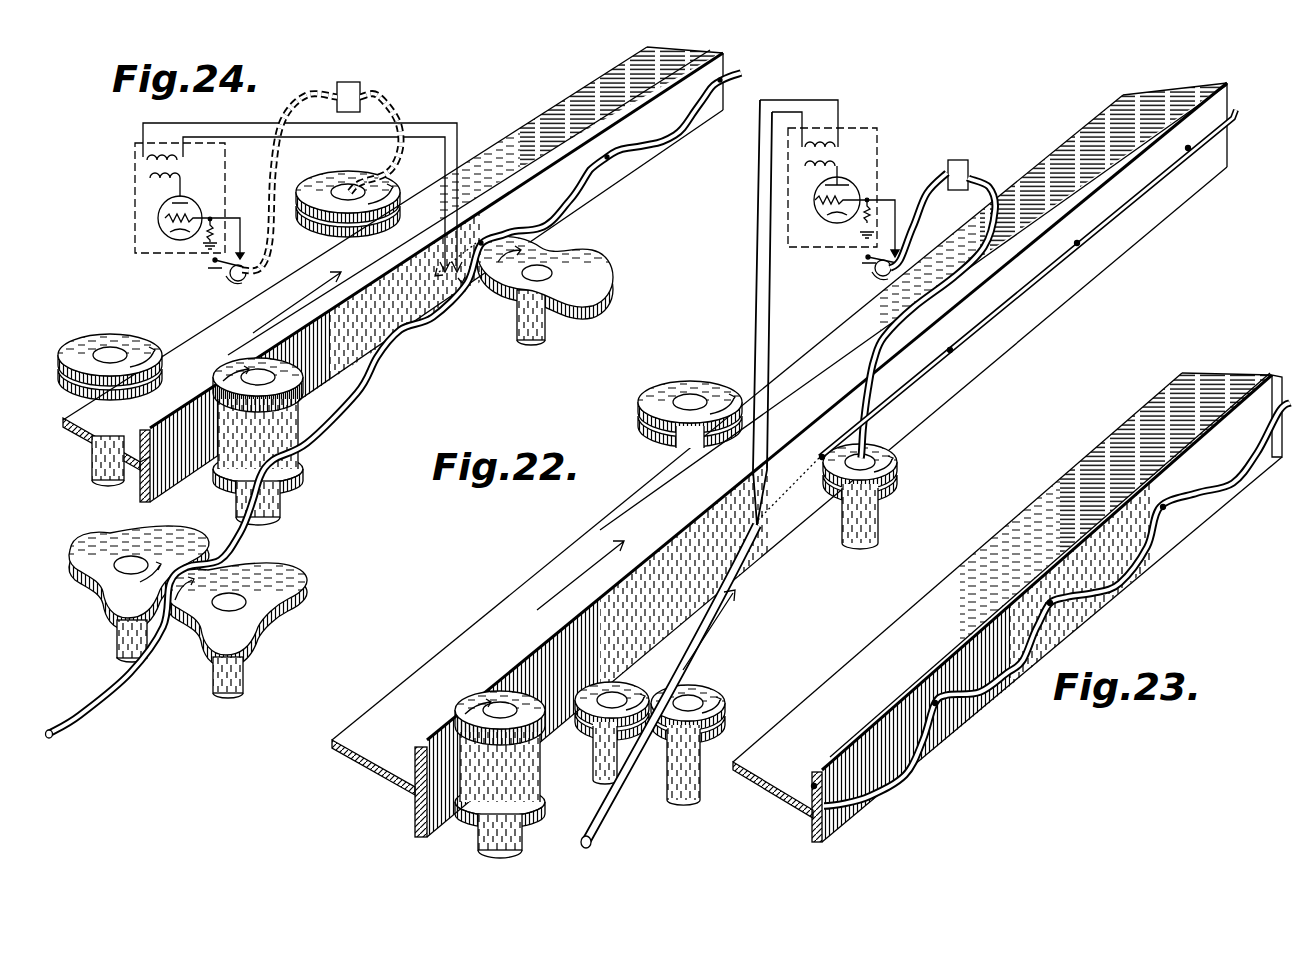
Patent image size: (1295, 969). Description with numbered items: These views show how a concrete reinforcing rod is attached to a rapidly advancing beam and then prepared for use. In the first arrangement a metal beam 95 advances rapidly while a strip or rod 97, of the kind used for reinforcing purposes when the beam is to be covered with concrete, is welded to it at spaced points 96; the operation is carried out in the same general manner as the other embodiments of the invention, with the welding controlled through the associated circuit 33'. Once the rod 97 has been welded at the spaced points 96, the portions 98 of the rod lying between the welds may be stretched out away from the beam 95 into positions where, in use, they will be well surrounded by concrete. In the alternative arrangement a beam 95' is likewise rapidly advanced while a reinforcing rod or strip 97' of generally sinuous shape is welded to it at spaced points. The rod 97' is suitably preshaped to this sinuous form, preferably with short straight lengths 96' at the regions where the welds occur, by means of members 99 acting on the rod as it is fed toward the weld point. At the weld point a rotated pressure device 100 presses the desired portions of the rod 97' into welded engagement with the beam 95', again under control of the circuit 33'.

In FIG. 24, the control circuit 33' is at (272, 183).
In FIG. 22, the control circuit 33' is at (874, 312).
In FIG. 22, the metal beam 95 is at (779, 460).
In FIG. 23, the metal beam 95 is at (1007, 607).
In FIG. 24, the beam 95' is at (391, 276).
In FIG. 22, the spaced points 96 is at (989, 303).
In FIG. 23, the spaced points 96 is at (987, 626).
In FIG. 24, the short straight lengths 96' is at (394, 405).
In FIG. 22, the strip or rod 97 is at (1028, 283).
In FIG. 24, the reinforcing rod or strip 97' is at (461, 310).
In FIG. 23, the portions of the rod 98 is at (905, 776).
In FIG. 24, the members 99 is at (222, 573).
In FIG. 24, the rotated pressure device 100 is at (583, 267).